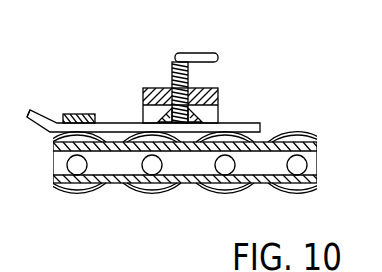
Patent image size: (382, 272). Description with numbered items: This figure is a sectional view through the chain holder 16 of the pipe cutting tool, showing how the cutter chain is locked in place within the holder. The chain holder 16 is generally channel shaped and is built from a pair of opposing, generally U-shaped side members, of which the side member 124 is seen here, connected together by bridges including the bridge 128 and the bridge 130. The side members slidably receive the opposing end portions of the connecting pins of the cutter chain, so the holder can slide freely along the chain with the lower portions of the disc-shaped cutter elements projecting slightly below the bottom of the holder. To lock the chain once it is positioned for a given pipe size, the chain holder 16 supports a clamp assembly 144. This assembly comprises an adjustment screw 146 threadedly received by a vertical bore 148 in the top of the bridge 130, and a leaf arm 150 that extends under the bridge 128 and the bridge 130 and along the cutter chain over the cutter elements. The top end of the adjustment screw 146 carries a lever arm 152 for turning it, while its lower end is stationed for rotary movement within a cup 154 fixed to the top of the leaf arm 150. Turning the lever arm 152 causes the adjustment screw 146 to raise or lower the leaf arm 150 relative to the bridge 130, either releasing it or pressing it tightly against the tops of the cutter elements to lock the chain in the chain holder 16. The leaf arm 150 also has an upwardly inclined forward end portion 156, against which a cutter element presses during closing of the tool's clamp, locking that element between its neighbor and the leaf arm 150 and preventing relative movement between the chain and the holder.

The chain holder 16 is at (195, 161).
The side member 124 is at (116, 178).
The bridge 128 is at (79, 113).
The bridge 130 is at (219, 105).
The clamp assembly 144 is at (188, 45).
The adjustment screw 146 is at (201, 75).
The vertical bore 148 is at (186, 88).
The leaf arm 150 is at (251, 124).
The lever arm 152 is at (214, 53).
The cup 154 is at (162, 118).
The forward end portion 156 is at (36, 113).